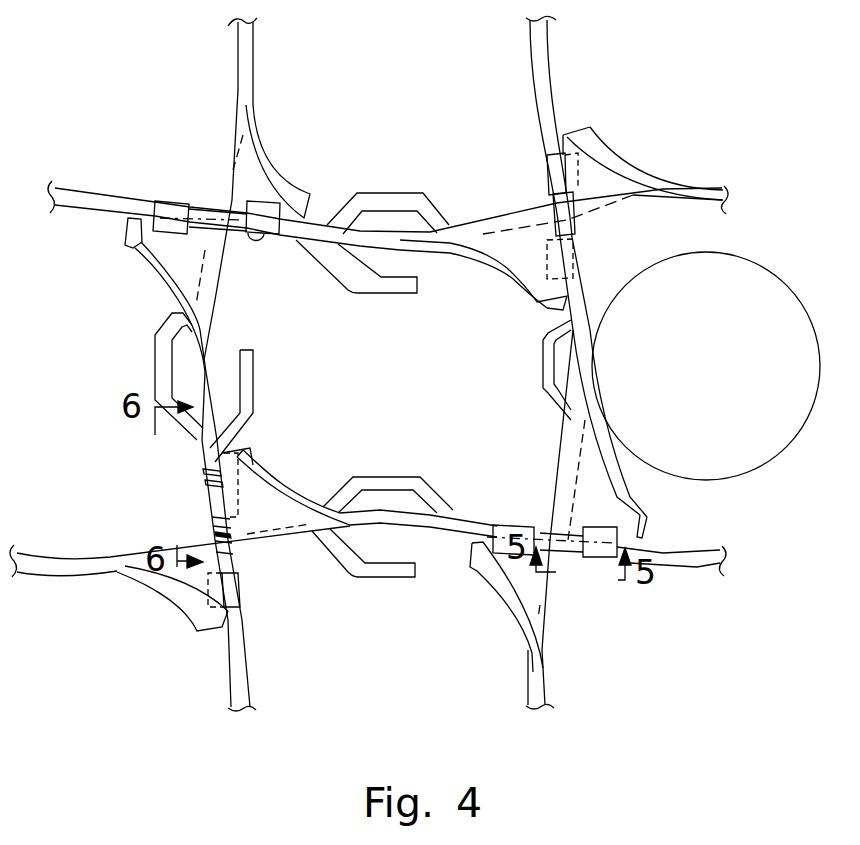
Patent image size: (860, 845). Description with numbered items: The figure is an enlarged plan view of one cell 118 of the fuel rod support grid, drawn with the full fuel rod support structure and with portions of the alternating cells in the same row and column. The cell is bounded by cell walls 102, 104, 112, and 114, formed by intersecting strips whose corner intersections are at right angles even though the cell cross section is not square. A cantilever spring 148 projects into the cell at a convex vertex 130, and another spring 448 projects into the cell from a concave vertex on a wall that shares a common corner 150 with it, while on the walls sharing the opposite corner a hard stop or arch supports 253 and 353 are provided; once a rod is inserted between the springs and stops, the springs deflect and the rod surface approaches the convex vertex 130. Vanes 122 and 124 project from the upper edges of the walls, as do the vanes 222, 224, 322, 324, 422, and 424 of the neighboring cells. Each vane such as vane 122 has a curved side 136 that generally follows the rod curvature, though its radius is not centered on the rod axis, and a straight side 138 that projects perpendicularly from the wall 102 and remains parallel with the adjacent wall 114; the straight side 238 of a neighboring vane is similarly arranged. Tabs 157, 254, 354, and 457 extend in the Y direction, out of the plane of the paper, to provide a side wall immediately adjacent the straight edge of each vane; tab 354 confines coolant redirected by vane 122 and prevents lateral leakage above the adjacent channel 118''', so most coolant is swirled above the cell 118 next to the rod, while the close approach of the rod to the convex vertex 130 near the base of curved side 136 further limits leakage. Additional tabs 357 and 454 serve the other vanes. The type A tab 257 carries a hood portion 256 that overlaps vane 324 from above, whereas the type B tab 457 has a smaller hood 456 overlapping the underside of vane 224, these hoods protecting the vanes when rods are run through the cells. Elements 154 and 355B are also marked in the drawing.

The cell wall 102 is at (724, 200).
The cell wall 104 is at (727, 580).
The cell wall 112 is at (247, 710).
The adjacent cell wall 114 is at (543, 707).
The cell 118 is at (385, 388).
The adjacent channel 118''' is at (726, 233).
The vane 122 is at (513, 250).
The vane 124 is at (597, 133).
The convex vertex 130 is at (400, 238).
The curved side 136 is at (513, 312).
The straight side 138 is at (572, 216).
The cantilever spring 148 is at (395, 293).
The common corner 150 is at (227, 213).
The curved corner strap 154 is at (128, 245).
The tab 157 is at (270, 160).
The vane 222 is at (183, 593).
The vane 224 is at (253, 483).
The straight side 238 is at (205, 470).
The arch support 253 is at (363, 473).
The tab 254 is at (543, 540).
The hood portion 256 is at (615, 583).
The tab 257 is at (643, 533).
The vane 322 is at (494, 607).
The vane 324 is at (603, 503).
The arch support 353 is at (530, 377).
The tab 354 is at (567, 231).
The ring 355B is at (575, 258).
The tab 357 is at (557, 202).
The vane 422 is at (196, 274).
The vane 424 is at (283, 172).
The spring 448 is at (253, 380).
The tab 454 is at (238, 562).
The hood 456 is at (210, 500).
The tab 457 is at (233, 525).